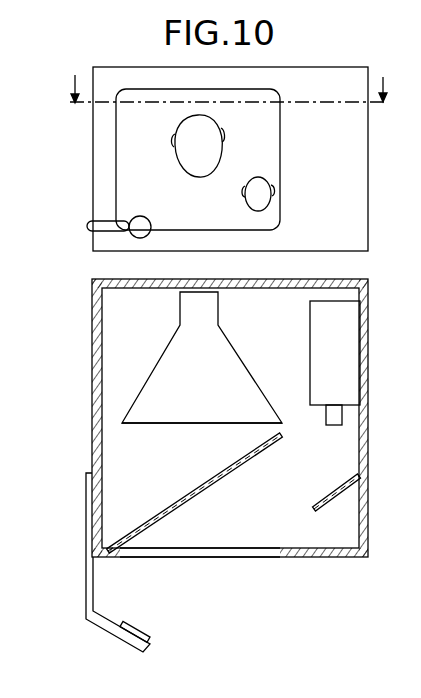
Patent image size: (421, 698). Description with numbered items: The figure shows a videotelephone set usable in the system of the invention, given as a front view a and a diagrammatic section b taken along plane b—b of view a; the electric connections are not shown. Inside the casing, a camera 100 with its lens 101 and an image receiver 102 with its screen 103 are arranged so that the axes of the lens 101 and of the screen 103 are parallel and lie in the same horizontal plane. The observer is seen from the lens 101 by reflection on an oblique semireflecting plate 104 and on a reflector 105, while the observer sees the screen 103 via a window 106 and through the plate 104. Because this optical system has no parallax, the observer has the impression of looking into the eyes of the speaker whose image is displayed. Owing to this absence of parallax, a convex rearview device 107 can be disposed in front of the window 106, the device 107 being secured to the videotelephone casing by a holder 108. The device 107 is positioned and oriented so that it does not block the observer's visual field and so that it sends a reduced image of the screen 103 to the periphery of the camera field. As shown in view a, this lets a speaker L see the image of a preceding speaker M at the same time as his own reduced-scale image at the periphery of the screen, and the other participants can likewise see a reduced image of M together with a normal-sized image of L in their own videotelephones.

The camera 100 is at (333, 363).
The lens 101 is at (333, 425).
The image receiver 102 is at (157, 363).
The screen 103 is at (182, 424).
The oblique semireflecting plate 104 is at (172, 508).
The reflector 105 is at (315, 502).
The window 106 is at (118, 127).
The convex rearview device 107 is at (143, 217).
The holder 108 is at (87, 224).
The front view a is at (360, 144).
The diagrammatic section along plane b— b is at (228, 83).
The preceding speaker M is at (197, 146).
The speaker L is at (249, 201).